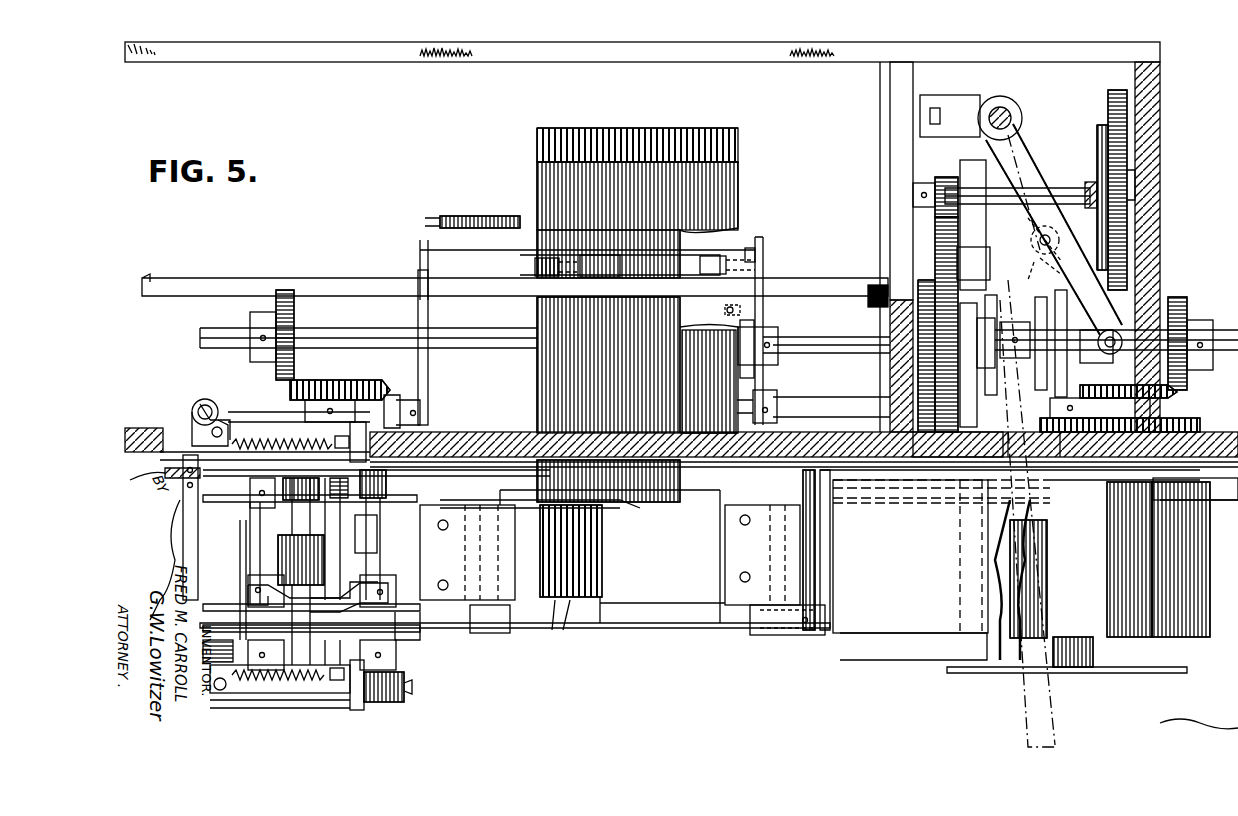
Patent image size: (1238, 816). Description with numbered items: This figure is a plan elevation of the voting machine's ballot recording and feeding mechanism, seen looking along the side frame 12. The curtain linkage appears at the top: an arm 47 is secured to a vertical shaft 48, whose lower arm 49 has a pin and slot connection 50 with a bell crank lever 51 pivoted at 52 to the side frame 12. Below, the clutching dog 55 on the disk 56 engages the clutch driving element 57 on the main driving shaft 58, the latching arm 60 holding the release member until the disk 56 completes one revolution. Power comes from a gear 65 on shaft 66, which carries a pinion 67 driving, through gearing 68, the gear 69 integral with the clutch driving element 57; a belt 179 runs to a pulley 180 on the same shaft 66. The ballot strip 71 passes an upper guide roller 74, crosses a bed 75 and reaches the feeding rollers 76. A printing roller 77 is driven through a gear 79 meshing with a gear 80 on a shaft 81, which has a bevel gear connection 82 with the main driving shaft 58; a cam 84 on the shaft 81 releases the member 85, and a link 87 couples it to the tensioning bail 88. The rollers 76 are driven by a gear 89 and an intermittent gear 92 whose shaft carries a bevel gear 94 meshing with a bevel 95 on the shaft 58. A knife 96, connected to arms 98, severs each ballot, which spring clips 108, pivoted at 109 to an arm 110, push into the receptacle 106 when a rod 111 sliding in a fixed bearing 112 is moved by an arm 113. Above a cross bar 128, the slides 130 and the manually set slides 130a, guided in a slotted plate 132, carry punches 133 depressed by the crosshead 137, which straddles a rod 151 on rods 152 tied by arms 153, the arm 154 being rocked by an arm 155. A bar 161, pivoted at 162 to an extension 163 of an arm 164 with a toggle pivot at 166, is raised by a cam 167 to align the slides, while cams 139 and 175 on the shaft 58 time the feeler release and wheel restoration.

The side frame 12 is at (1150, 80).
The arm 47 is at (1020, 690).
The vertical shaft 48 is at (1002, 114).
The arm 49 is at (1046, 152).
The pin and slot connection 50 is at (1050, 235).
The bell crank lever 51 is at (1054, 258).
The pivot 52 is at (1182, 282).
The clutching dog 55 is at (958, 444).
The disk 56 is at (1000, 312).
The clutch driving element 57 is at (960, 345).
The main driving shaft 58 is at (362, 340).
The latching arm 60 is at (985, 250).
The gear 65 is at (1115, 173).
The shaft 66 is at (1065, 190).
The pinion 67 is at (935, 185).
The gearing 68 is at (925, 240).
The gear 69 is at (875, 308).
The strip 71 is at (618, 628).
The upper guide roller 74 is at (1212, 605).
The bed 75 is at (875, 660).
The feeding rollers 76 is at (301, 559).
The printing roller 77 is at (1072, 645).
The gear 79 is at (1021, 444).
The gear 80 is at (1150, 420).
The shaft 81 is at (1135, 580).
The bevel gear connection 82 is at (1190, 388).
The cam 84 is at (1135, 503).
The member 85 is at (1222, 500).
The link 87 is at (1073, 444).
The tensioning bail 88 is at (822, 566).
The gear 89 is at (232, 500).
The intermittent gear 92 is at (400, 640).
The bevel gear 94 is at (337, 383).
The bevel 95 is at (288, 290).
The knife 96 is at (238, 610).
The arms 98 is at (228, 520).
The receptacle 106 is at (146, 481).
The spring clips 108 is at (140, 452).
The pivot 109 is at (220, 418).
The arm 110 is at (192, 412).
The rod 111 is at (276, 414).
The fixed bearing 112 is at (370, 441).
The arm 113 is at (396, 395).
The cross bar 128 is at (352, 285).
The slide 130 is at (690, 186).
The slides 130a is at (447, 219).
The slotted plate 132 is at (554, 627).
The punch 133 is at (565, 505).
The crosshead 137 is at (693, 625).
The cam 139 is at (1064, 370).
The rod 151 is at (758, 630).
The rods 152 is at (418, 545).
The arms 153 is at (602, 555).
The arm 154 is at (340, 585).
The arm 155 is at (262, 588).
The bar 161 is at (722, 258).
The pivot 162 is at (738, 262).
The extension 163 is at (758, 256).
The arm 164 is at (420, 262).
The pivot 166 is at (742, 310).
The cam 167 is at (756, 362).
The cam 175 is at (1076, 330).
The belt 179 is at (1118, 108).
The pulley 180 is at (1112, 140).